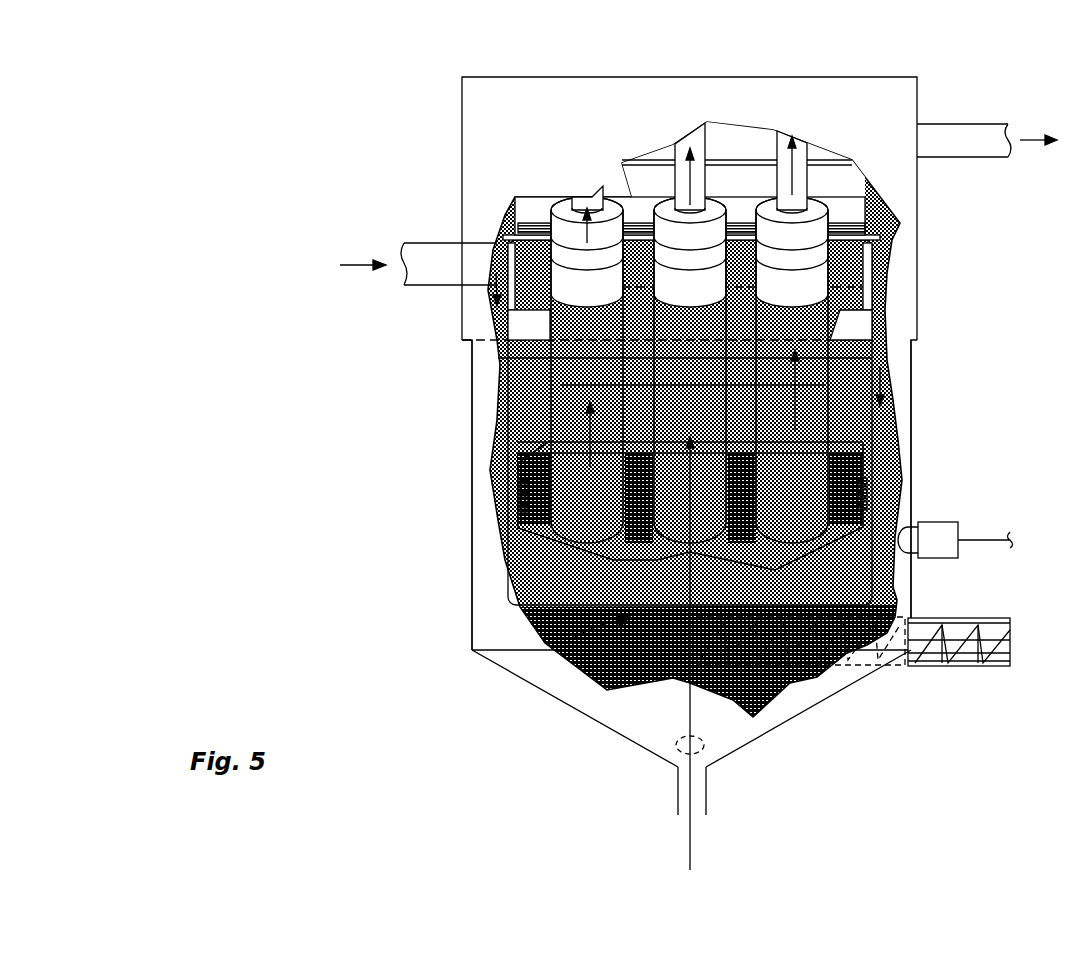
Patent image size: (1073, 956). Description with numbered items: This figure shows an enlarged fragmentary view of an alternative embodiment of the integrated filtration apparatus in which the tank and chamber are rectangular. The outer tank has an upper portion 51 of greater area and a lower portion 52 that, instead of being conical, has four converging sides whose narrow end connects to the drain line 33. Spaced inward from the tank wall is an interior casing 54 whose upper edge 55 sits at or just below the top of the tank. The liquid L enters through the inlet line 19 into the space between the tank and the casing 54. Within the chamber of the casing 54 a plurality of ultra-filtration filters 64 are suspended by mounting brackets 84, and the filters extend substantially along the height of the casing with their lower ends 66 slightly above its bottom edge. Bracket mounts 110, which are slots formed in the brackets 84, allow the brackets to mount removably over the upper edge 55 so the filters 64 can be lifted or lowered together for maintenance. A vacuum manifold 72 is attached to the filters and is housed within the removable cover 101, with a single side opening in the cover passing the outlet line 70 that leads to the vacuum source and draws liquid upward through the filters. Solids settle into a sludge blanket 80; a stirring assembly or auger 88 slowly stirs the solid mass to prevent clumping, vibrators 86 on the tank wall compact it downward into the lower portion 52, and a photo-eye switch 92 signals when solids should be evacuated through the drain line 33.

The cover 101 is at (575, 105).
The upper edge of the casing 55 is at (512, 210).
The bracket mounts 110 is at (500, 232).
The liquid inlet line 19 is at (430, 253).
The mounting brackets 84 is at (540, 222).
The ultra-filtration filters 64 is at (628, 275).
The vacuum manifold 72 is at (785, 152).
The outlet line 70 is at (945, 140).
The liquid L is at (497, 323).
The interior casing 54 is at (522, 360).
The upper portion of the tank 51 is at (472, 408).
The vibrators 86 is at (520, 492).
The lower ends of the filters 66 is at (613, 560).
The sludge blanket 80 is at (567, 617).
The lower portion of the tank 52 is at (577, 688).
The drain line 33 is at (706, 785).
The stirring assembly or auger 88 is at (933, 667).
The photo-eye switch 92 is at (950, 533).